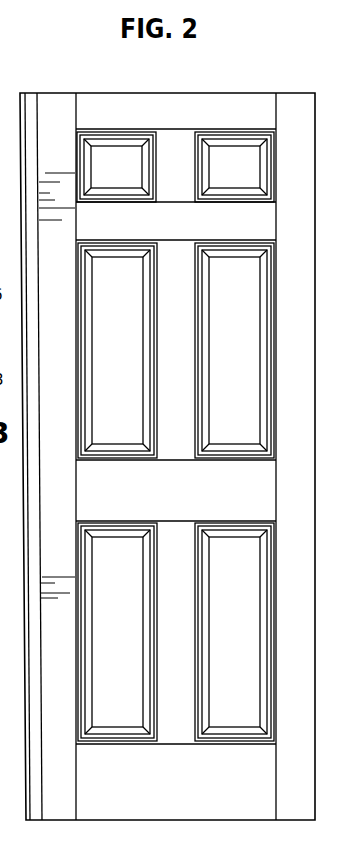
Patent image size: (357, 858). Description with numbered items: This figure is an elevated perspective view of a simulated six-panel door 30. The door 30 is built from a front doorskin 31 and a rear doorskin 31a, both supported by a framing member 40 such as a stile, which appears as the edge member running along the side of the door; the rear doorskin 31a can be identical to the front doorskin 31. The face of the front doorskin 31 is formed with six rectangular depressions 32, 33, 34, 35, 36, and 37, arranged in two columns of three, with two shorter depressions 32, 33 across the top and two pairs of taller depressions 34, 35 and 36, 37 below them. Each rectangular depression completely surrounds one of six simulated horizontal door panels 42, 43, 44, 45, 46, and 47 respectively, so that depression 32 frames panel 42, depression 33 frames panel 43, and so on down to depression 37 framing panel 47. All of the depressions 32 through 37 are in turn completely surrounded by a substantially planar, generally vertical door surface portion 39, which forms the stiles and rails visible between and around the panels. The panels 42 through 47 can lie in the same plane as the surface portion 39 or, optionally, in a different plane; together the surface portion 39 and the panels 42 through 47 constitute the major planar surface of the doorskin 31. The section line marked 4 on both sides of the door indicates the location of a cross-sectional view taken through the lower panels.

The six-panel door 30 is at (320, 110).
The front doorskin 31 is at (100, 104).
The rear doorskin 31a is at (21, 102).
The framing member 40 is at (30, 98).
The door surface portion 39 is at (300, 171).
The depression 32 is at (122, 140).
The depression 33 is at (222, 136).
The depression 34 is at (108, 247).
The depression 35 is at (233, 252).
The depression 36 is at (108, 530).
The depression 37 is at (233, 532).
The simulated door panel 42 is at (124, 179).
The simulated door panel 43 is at (241, 179).
The simulated door panel 44 is at (127, 352).
The simulated door panel 45 is at (243, 362).
The simulated door panel 46 is at (127, 609).
The simulated door panel 47 is at (246, 636).
The section line 4- 4 is at (14, 678).